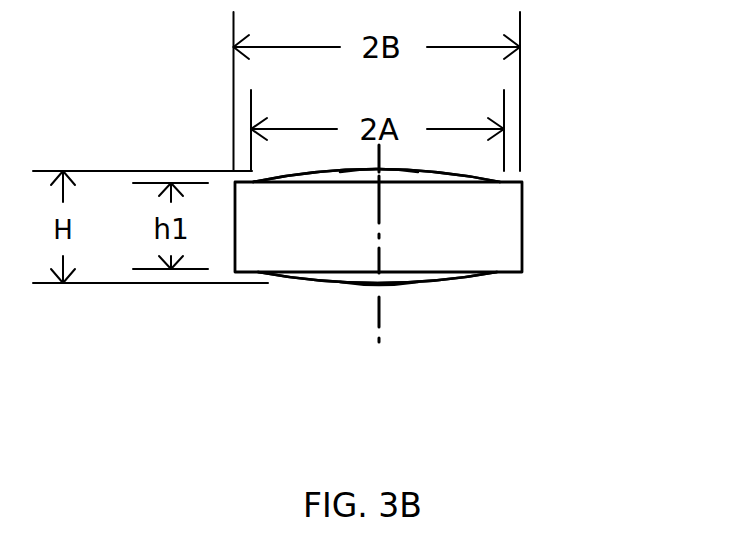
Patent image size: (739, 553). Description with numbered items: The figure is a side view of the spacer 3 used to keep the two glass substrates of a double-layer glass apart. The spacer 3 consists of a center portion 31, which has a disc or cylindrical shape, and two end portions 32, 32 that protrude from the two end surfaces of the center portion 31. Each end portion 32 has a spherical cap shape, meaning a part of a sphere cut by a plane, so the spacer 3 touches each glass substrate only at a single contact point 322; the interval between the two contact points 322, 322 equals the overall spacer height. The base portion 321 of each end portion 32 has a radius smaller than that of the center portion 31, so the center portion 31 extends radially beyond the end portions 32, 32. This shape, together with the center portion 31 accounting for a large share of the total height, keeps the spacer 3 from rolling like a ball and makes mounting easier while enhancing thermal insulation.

The spacer 3 is at (473, 276).
The center portion 31 is at (485, 243).
The end portion 32 is at (455, 174).
The base portion 321 is at (495, 181).
The contact point 322 is at (382, 170).